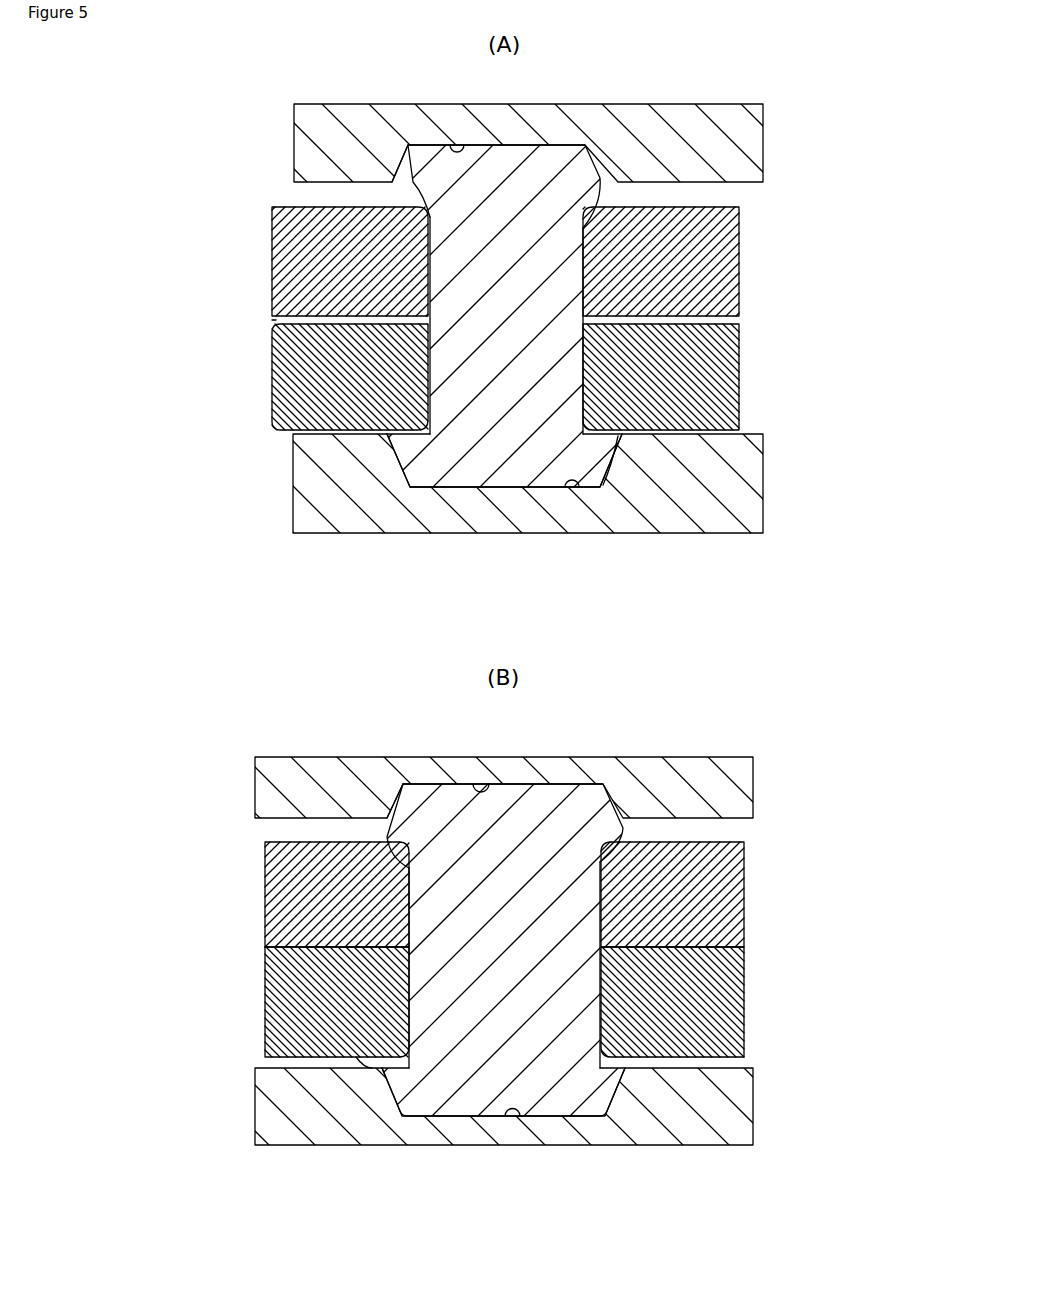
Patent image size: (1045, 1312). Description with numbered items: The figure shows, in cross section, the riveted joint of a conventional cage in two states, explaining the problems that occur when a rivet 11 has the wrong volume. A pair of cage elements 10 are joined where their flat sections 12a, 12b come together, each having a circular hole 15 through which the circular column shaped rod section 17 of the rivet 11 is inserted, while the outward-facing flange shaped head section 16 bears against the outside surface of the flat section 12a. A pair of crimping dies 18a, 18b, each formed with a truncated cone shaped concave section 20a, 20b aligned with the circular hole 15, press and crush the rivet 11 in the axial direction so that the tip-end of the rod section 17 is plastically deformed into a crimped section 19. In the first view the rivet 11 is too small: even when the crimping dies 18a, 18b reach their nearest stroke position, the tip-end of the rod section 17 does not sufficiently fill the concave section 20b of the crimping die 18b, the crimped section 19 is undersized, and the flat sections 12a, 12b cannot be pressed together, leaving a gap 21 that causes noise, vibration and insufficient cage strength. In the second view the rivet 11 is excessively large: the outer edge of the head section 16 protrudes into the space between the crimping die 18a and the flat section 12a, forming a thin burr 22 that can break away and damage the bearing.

In FIG. 5A, the cage element 10 is at (277, 245).
In FIG. 5B, the cage element 10 is at (280, 906).
In FIG. 5A, the rivet 11 is at (434, 237).
In FIG. 5B, the rivet 11 is at (417, 893).
In FIG. 5A, the flat section 12a is at (290, 390).
In FIG. 5B, the flat section 12a is at (293, 1030).
In FIG. 5A, the flat section 12b is at (722, 267).
In FIG. 5B, the flat section 12b is at (723, 910).
In FIG. 5A, the circular hole 15 is at (572, 243).
In FIG. 5B, the circular hole 15 is at (600, 902).
In FIG. 5A, the head section 16 is at (556, 470).
In FIG. 5B, the head section 16 is at (590, 1098).
In FIG. 5A, the rod section 17 is at (512, 345).
In FIG. 5B, the rod section 17 is at (513, 985).
In FIG. 5A, the crimping die 18a is at (312, 510).
In FIG. 5B, the crimping die 18a is at (275, 1136).
In FIG. 5A, the crimping die 18b is at (753, 148).
In FIG. 5B, the crimping die 18b is at (756, 793).
In FIG. 5A, the crimped section 19 is at (414, 183).
In FIG. 5B, the crimped section 19 is at (387, 833).
In FIG. 5A, the concave section 20a is at (575, 487).
In FIG. 5B, the concave section 20a is at (519, 1118).
In FIG. 5A, the concave section 20b is at (451, 142).
In FIG. 5B, the concave section 20b is at (473, 784).
In FIG. 5A, the gap 21 is at (272, 320).
In FIG. 5B, the burr 22 is at (360, 1068).